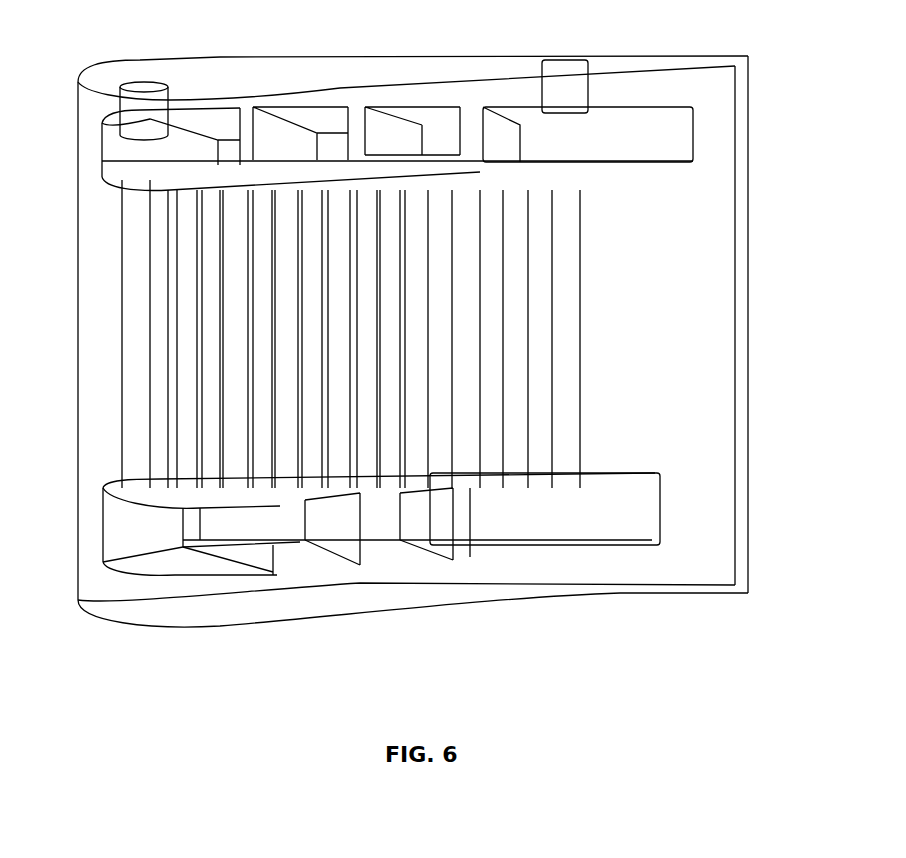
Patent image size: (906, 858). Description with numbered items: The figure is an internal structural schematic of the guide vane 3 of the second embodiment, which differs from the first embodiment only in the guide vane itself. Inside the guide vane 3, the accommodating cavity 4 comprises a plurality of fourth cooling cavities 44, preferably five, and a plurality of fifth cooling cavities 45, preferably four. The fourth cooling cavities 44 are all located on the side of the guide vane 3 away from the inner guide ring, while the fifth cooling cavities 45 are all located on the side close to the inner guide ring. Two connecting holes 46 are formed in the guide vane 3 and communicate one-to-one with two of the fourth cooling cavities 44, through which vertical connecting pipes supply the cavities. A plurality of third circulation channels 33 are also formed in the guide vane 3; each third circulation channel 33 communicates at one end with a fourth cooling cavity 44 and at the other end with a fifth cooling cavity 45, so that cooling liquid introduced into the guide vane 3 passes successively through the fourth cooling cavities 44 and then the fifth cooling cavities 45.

The guide vane 3 is at (688, 326).
The accommodating cavity 4 is at (713, 137).
The third circulation channels 33 is at (135, 327).
The fourth cooling cavities 44 is at (110, 162).
The fifth cooling cavities 45 is at (180, 563).
The connecting holes 46 is at (137, 103).